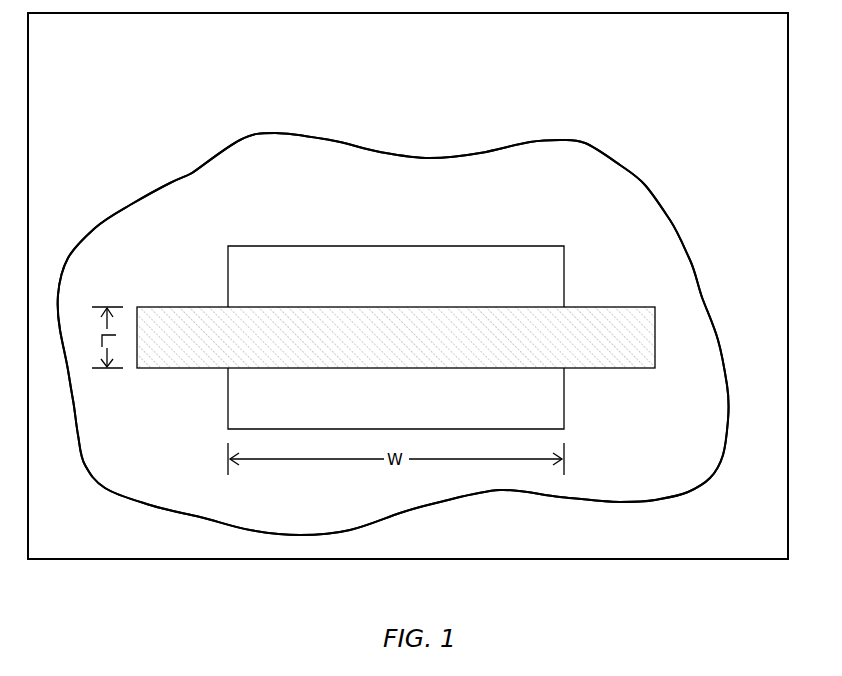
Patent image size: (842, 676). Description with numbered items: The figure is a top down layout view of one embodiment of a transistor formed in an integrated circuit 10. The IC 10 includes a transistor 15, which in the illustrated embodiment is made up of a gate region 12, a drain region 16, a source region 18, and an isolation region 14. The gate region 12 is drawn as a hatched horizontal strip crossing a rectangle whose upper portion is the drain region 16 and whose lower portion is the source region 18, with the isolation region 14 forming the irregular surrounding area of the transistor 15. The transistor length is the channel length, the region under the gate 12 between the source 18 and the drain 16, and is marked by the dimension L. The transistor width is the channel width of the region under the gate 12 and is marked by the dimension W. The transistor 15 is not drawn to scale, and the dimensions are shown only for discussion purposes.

The integrated circuit 10 is at (408, 286).
The gate region 12 is at (396, 337).
The isolation region 14 is at (393, 334).
The transistor 15 is at (580, 141).
The drain region 16 is at (396, 276).
The source region 18 is at (396, 398).